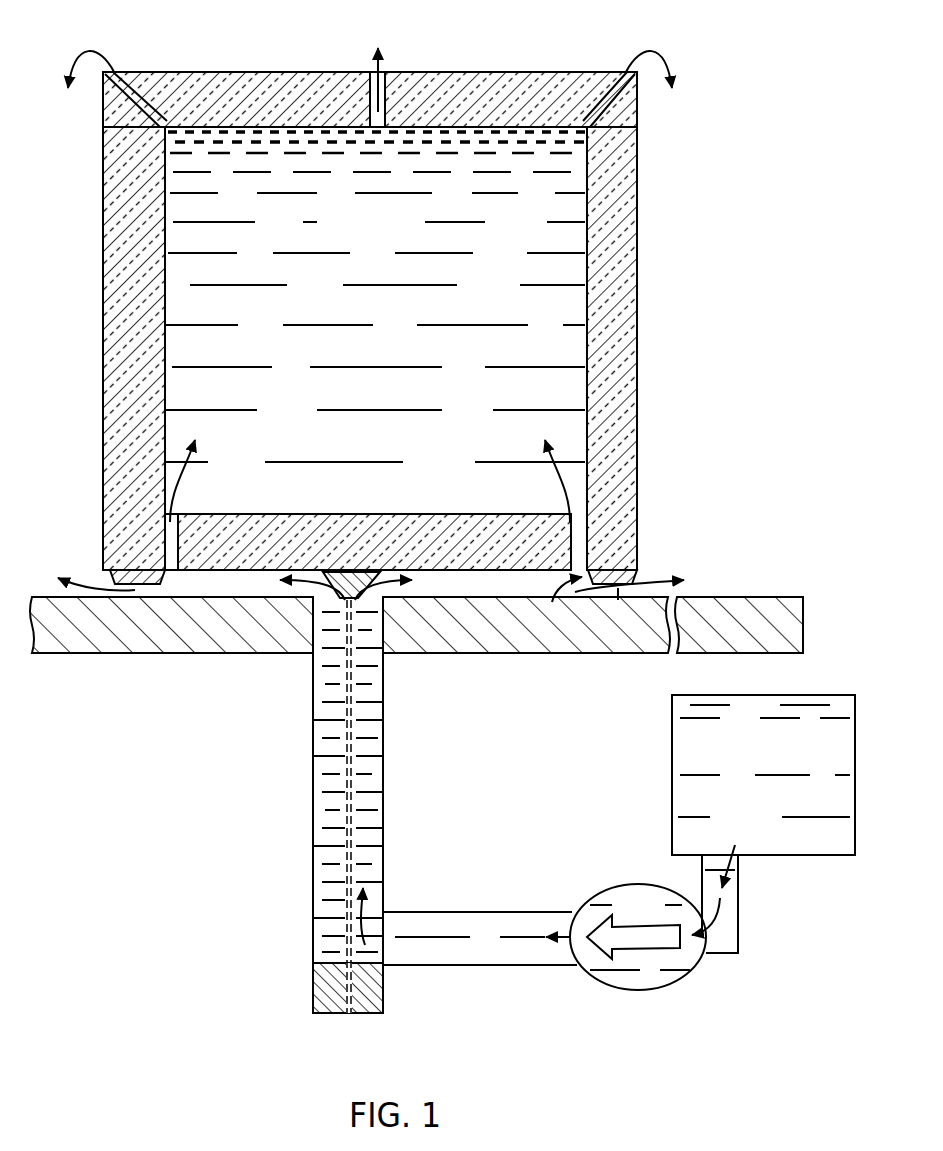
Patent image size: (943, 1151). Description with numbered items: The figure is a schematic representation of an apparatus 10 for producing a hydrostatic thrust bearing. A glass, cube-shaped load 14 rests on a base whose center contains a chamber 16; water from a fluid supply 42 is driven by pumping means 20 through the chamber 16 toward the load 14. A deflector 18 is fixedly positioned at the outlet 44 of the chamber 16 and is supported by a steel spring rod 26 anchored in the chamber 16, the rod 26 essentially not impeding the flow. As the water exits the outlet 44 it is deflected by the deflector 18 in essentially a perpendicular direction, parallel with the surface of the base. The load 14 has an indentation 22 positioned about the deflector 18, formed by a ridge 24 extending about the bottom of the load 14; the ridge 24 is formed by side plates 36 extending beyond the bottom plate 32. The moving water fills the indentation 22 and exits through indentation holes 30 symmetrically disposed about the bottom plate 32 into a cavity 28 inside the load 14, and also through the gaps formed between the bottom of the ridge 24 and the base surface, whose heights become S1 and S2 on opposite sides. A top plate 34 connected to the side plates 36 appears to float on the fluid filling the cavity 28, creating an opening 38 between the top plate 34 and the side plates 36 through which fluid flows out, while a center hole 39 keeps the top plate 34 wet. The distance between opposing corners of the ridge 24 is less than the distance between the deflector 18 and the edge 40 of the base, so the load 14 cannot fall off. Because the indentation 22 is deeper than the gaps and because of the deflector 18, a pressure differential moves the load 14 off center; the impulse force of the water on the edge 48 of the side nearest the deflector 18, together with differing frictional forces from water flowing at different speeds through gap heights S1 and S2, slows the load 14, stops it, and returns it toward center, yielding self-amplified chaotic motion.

The apparatus 10 is at (728, 610).
The load 14 is at (368, 286).
The chamber 16 is at (322, 875).
The deflector 18 is at (343, 610).
The pumping means 20 is at (627, 920).
The indentation 22 is at (462, 578).
The ridge 24 is at (125, 578).
The steel spring rod 26 is at (345, 940).
The cavity 28 is at (580, 237).
The indentation holes 30 is at (180, 535).
The bottom plate 32 is at (458, 530).
The top plate 34 is at (510, 88).
The side plates 36 is at (118, 218).
The opening 38 is at (618, 74).
The center hole 39 is at (400, 112).
The edge of the base 40 is at (817, 690).
The fluid supply 42 is at (756, 832).
The outlet 44 is at (390, 590).
The edge 48 is at (552, 604).
The gap height S1 is at (618, 615).
The gap height S2 is at (188, 628).